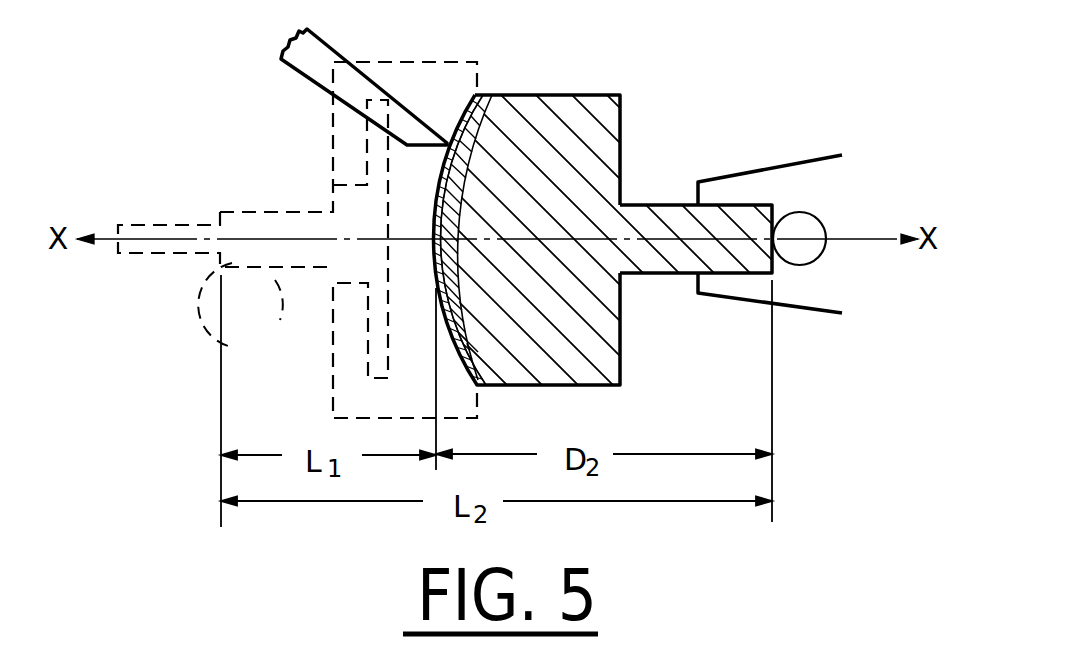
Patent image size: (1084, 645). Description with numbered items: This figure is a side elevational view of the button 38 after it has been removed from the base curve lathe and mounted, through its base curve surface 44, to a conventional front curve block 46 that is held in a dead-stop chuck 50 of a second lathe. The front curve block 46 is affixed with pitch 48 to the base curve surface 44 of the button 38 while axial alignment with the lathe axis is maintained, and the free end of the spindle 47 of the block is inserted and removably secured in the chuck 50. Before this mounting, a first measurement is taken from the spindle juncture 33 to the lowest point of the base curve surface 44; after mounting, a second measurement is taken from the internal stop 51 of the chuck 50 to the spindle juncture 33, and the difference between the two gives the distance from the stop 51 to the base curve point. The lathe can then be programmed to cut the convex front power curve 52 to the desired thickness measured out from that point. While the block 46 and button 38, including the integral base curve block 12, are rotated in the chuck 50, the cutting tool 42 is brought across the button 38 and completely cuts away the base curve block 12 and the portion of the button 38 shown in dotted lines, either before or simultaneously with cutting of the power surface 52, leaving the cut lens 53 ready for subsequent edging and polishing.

The base curve block 12 is at (240, 307).
The spindle juncture 33 is at (218, 345).
The button 38 is at (378, 62).
The cutting tool 42 is at (310, 62).
The base curve surface 44 is at (482, 110).
The front curve block 46 is at (600, 107).
The spindle 47 is at (663, 210).
The pitch 48 is at (487, 147).
The dead-stop chuck 50 is at (765, 168).
The internal stop 51 is at (820, 257).
The front power curve 52 is at (452, 122).
The cut lens 53 is at (465, 352).